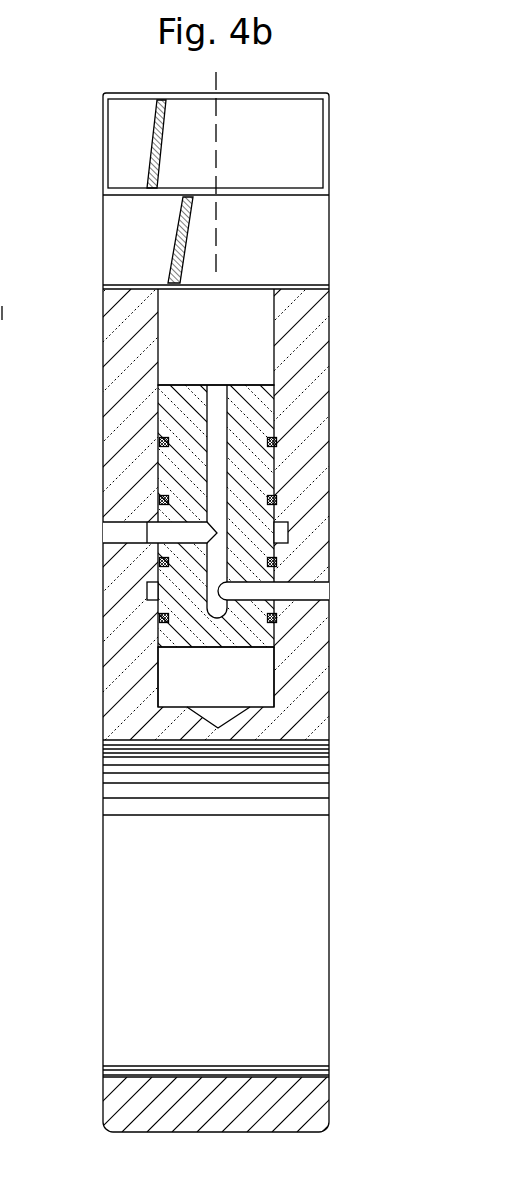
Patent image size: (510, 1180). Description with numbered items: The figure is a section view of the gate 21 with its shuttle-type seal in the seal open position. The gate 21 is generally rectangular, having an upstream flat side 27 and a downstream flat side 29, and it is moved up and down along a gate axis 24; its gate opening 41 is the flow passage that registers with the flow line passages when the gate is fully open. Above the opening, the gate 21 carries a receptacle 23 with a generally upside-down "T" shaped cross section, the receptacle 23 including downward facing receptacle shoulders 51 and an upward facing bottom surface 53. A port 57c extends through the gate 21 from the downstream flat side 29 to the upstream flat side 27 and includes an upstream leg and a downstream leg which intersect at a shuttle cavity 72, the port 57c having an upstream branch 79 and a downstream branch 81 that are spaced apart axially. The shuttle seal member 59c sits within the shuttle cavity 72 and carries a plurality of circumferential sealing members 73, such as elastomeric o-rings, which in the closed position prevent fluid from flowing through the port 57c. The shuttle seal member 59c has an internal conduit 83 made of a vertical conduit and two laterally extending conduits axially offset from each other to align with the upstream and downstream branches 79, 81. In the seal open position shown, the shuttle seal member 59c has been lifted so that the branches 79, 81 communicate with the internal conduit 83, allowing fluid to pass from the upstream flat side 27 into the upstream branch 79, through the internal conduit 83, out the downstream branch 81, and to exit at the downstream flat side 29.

The gate 21 is at (340, 326).
The receptacle 23 is at (307, 262).
The gate axis 24 is at (216, 137).
The upstream flat side 27 is at (103, 437).
The downstream flat side 29 is at (329, 380).
The gate opening 41 is at (287, 1002).
The downward facing receptacle shoulders 51 is at (303, 193).
The bottom surface 53 is at (135, 285).
The port 57c is at (262, 663).
The shuttle seal member 59c is at (263, 533).
The shuttle cavity 72 is at (195, 342).
The circumferential sealing members 73 is at (272, 442).
The upstream branch 79 is at (115, 533).
The downstream branch 81 is at (308, 592).
The internal conduit 83 is at (218, 480).